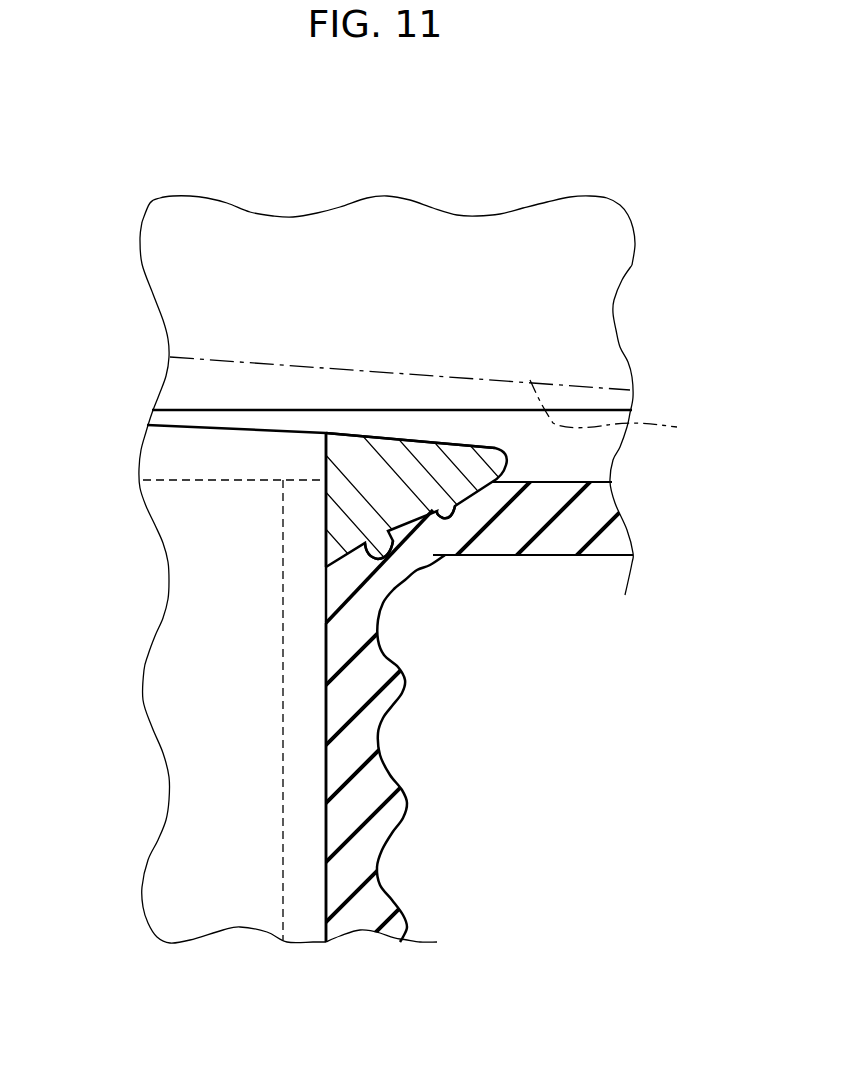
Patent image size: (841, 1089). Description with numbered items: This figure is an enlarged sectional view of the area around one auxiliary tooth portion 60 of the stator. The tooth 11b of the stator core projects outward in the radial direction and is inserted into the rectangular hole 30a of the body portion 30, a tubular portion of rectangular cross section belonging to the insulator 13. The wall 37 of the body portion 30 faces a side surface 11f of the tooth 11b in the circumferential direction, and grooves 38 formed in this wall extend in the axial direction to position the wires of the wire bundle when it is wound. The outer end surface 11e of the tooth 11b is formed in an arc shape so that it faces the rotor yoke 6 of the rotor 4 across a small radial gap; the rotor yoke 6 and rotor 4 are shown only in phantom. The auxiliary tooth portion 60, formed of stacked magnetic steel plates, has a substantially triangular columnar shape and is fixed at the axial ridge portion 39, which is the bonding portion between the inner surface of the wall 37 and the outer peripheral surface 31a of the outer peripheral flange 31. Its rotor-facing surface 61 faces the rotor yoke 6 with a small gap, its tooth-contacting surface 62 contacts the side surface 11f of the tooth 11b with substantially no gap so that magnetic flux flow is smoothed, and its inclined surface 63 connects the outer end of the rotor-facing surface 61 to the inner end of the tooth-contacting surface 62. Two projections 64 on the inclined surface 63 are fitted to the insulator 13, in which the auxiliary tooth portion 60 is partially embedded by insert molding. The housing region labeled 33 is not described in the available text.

The auxiliary tooth portion 60 is at (383, 438).
The rotor-facing surface 61 is at (421, 443).
The insulator 13 is at (495, 249).
The housing wall 33 is at (200, 252).
The outer end surface 11e is at (189, 425).
The rotor yoke 6 is at (448, 400).
The rotor 4 is at (448, 400).
The outer peripheral surface 31a is at (580, 482).
The projection (fitting portion) 64 is at (452, 522).
The outer peripheral flange 31 is at (600, 522).
The tooth-contacting surface 62 is at (326, 510).
The inclined surface 63 is at (372, 546).
The axial ridge portion 39 is at (430, 543).
The tooth 11b is at (183, 695).
The side surface 11f is at (327, 687).
The body portion 30 is at (410, 805).
The rectangular hole 30a is at (326, 800).
The groove 38 is at (377, 868).
The wall 37 is at (368, 913).